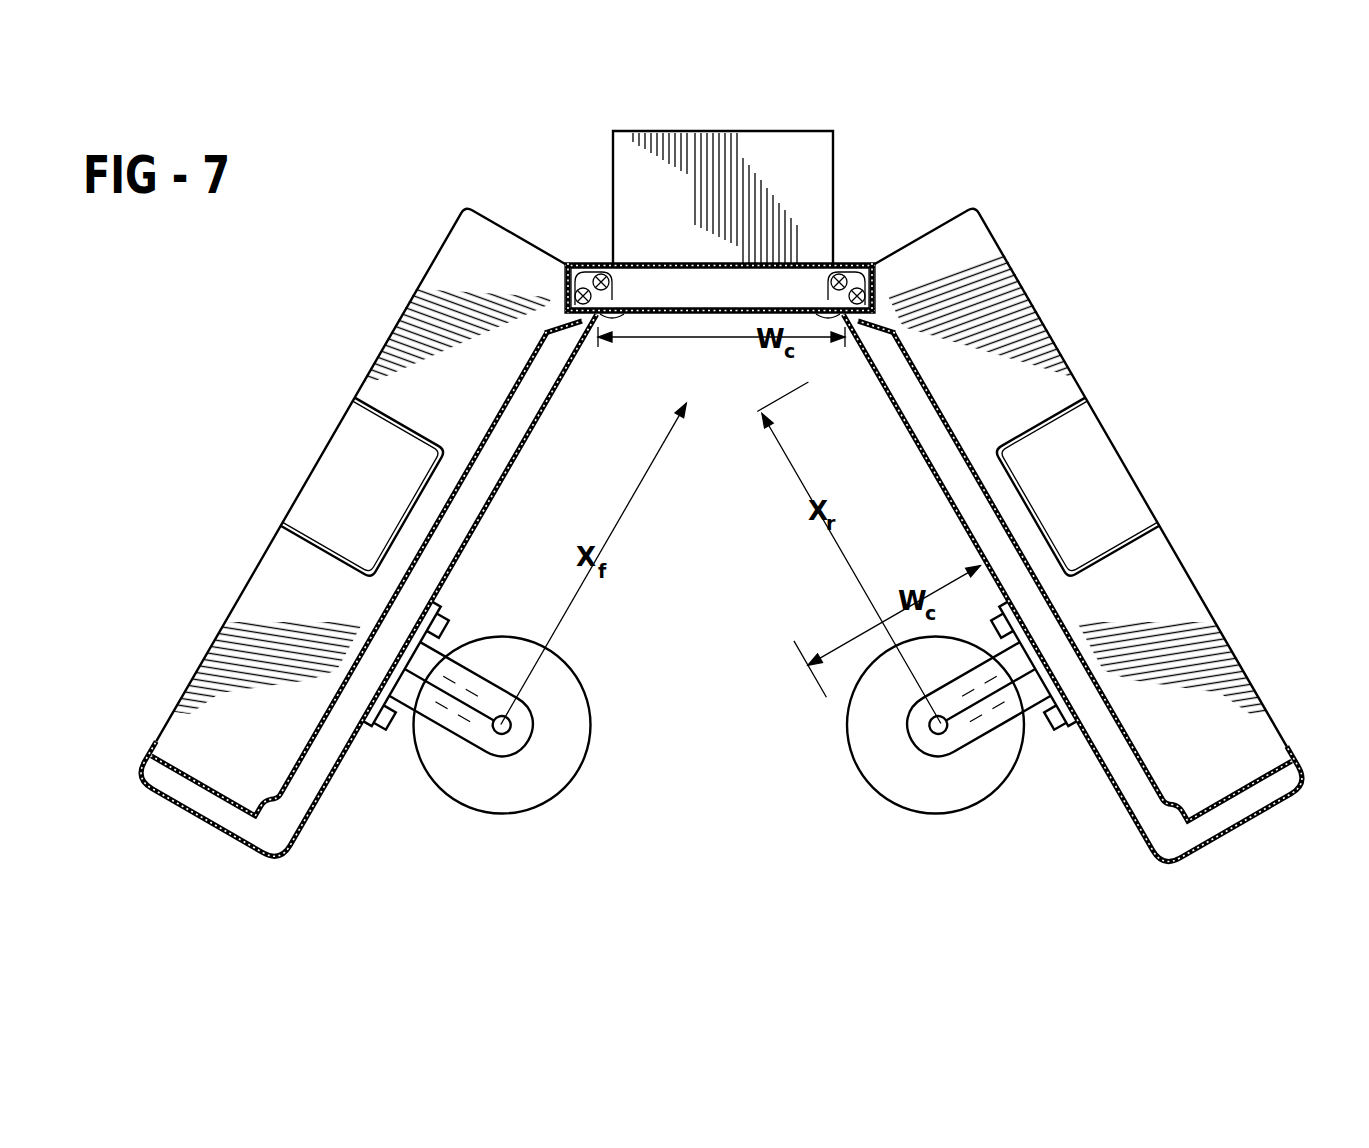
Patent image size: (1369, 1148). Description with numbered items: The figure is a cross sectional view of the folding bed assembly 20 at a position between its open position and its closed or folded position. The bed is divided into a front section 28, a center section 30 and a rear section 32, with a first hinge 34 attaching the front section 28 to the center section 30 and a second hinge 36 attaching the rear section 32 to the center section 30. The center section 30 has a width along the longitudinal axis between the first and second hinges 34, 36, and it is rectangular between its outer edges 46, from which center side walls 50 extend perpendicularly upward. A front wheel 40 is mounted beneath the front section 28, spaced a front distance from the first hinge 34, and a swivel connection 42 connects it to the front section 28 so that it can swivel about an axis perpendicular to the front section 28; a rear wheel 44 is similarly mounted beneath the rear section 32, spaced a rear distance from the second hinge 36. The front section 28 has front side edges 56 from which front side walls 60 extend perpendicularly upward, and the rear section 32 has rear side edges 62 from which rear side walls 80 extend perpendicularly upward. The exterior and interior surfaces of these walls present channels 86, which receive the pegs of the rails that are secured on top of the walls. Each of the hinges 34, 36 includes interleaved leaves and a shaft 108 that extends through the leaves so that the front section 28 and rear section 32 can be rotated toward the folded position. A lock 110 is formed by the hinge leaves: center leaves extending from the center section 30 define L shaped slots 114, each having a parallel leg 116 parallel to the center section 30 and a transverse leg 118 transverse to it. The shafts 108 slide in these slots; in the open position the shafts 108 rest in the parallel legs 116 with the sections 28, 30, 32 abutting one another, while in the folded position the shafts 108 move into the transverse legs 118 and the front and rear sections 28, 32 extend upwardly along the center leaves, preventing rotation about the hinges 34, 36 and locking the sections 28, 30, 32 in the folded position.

The assembly 20 is at (1090, 186).
The front section 28 is at (268, 848).
The center section 30 is at (652, 264).
The rear section 32 is at (1160, 848).
The first hinge 34 is at (562, 296).
The second hinge 36 is at (878, 318).
The front wheels 40 is at (485, 795).
The swivel connection 42 is at (418, 700).
The rear wheels 44 is at (935, 795).
The outer edges 46 is at (698, 262).
The center side walls 50 is at (814, 148).
The front side edges 56 is at (158, 743).
The front side walls 60 is at (228, 653).
The rear side edges 62 is at (1143, 762).
The rear side walls 80 is at (1183, 598).
The channels 86 is at (330, 494).
The shaft 108 is at (582, 292).
The lock 110 is at (547, 322).
The L shaped slots 114 is at (597, 280).
The parallel leg 116 is at (812, 263).
The transverse leg 118 is at (598, 283).